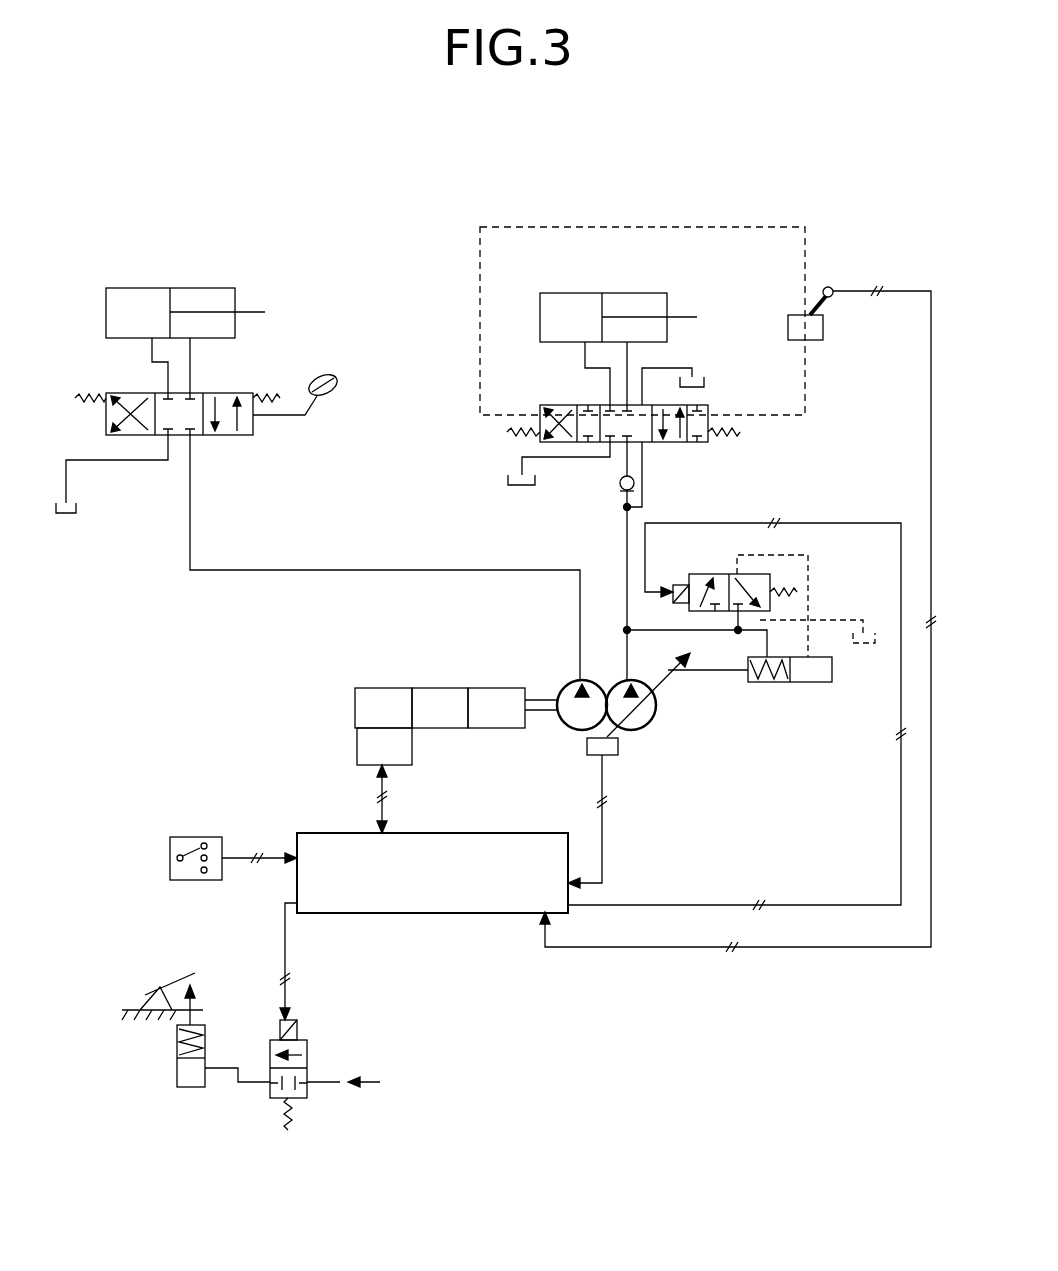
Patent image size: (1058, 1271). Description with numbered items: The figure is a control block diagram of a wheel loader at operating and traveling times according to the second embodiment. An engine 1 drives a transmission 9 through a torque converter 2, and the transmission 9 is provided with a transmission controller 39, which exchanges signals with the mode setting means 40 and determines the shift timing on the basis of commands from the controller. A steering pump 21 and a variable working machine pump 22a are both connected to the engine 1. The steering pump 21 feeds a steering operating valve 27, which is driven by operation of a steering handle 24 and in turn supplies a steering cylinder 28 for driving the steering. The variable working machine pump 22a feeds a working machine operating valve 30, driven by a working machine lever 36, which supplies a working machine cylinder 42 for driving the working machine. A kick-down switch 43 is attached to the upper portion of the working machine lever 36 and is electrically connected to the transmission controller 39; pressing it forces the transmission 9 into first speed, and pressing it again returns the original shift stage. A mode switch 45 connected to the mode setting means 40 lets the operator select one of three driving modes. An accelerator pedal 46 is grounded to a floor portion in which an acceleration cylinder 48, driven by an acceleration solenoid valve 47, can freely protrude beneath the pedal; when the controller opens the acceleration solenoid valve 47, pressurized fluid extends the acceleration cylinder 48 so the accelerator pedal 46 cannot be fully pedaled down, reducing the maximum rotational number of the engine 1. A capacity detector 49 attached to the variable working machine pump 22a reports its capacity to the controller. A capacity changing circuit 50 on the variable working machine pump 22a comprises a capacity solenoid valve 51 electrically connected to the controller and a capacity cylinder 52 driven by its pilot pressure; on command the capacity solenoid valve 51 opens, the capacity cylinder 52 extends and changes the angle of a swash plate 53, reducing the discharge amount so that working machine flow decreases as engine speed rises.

The engine 1 is at (492, 688).
The torque converter 2 is at (432, 688).
The transmission 9 is at (380, 688).
The steering pump 21 is at (566, 727).
The variable working machine pump 22a is at (656, 712).
The steering handle 24 is at (340, 383).
The steering operating valve 27 is at (253, 425).
The steering cylinder 28 is at (205, 288).
The working machine operating valve 30 is at (700, 442).
The working machine lever 36 is at (808, 305).
The transmission controller 39 is at (355, 755).
The mode setting means 40 is at (468, 913).
The working machine cylinder 42 is at (632, 293).
The kick-down switch 43 is at (830, 287).
The mode switch 45 is at (190, 837).
The accelerator pedal 46 is at (165, 983).
The acceleration solenoid valve 47 is at (307, 1045).
The acceleration cylinder 48 is at (177, 1073).
The capacity detector 49 is at (618, 755).
The capacity changing circuit 50 is at (838, 504).
The capacity solenoid valve 51 is at (705, 574).
The capacity cylinder 52 is at (805, 682).
The swash plate 53 is at (670, 673).